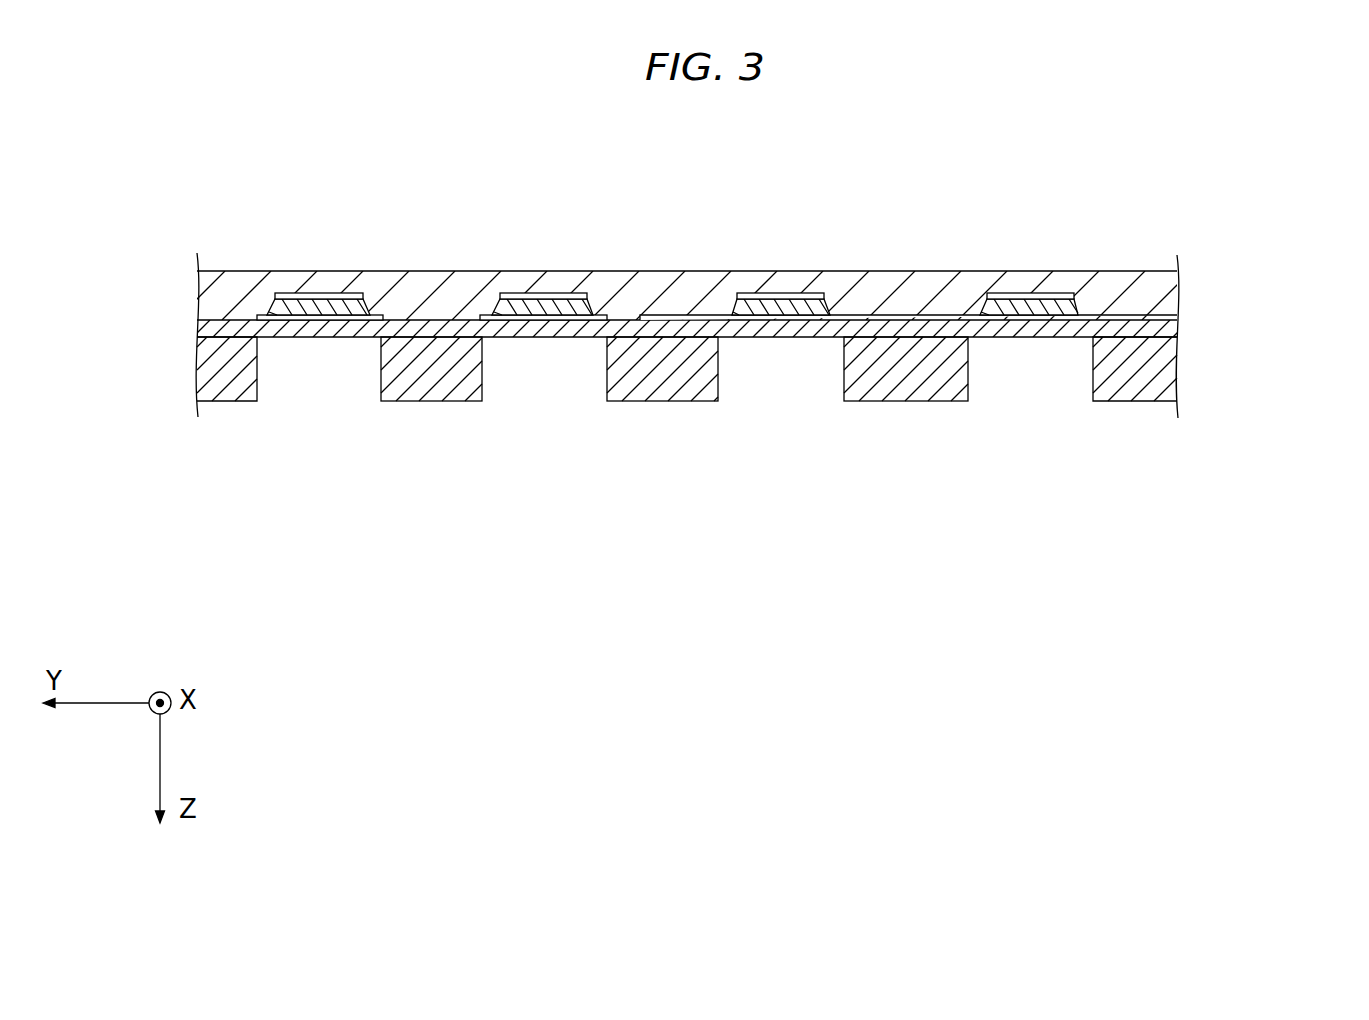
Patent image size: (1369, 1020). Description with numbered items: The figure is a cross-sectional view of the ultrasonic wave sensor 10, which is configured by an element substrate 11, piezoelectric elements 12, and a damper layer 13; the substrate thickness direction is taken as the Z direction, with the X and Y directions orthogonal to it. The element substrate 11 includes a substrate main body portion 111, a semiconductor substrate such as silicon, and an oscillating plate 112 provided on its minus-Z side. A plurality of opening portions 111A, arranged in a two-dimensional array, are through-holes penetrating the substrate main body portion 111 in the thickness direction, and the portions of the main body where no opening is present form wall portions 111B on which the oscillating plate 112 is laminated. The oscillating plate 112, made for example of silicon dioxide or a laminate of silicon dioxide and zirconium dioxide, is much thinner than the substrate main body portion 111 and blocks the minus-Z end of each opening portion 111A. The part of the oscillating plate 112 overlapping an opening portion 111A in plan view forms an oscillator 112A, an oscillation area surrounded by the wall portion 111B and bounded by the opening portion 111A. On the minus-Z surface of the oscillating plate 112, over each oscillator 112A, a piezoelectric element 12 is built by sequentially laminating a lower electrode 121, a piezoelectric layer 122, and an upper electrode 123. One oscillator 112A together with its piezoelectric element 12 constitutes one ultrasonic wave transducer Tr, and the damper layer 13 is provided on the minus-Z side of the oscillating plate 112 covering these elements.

The ultrasonic wave sensor 10 is at (772, 308).
The element substrate 11 is at (781, 412).
The substrate main body portion 111 is at (1153, 372).
The opening portion 111A is at (1050, 372).
The wall portion 111B is at (898, 387).
The oscillating plate 112 is at (1170, 333).
The oscillator 112A is at (543, 337).
The piezoelectric element 12 is at (717, 229).
The lower electrode 121 is at (722, 313).
The piezoelectric layer 122 is at (770, 303).
The upper electrode 123 is at (707, 190).
The damper layer 13 is at (273, 271).
The ultrasonic wave transducer Tr is at (395, 280).